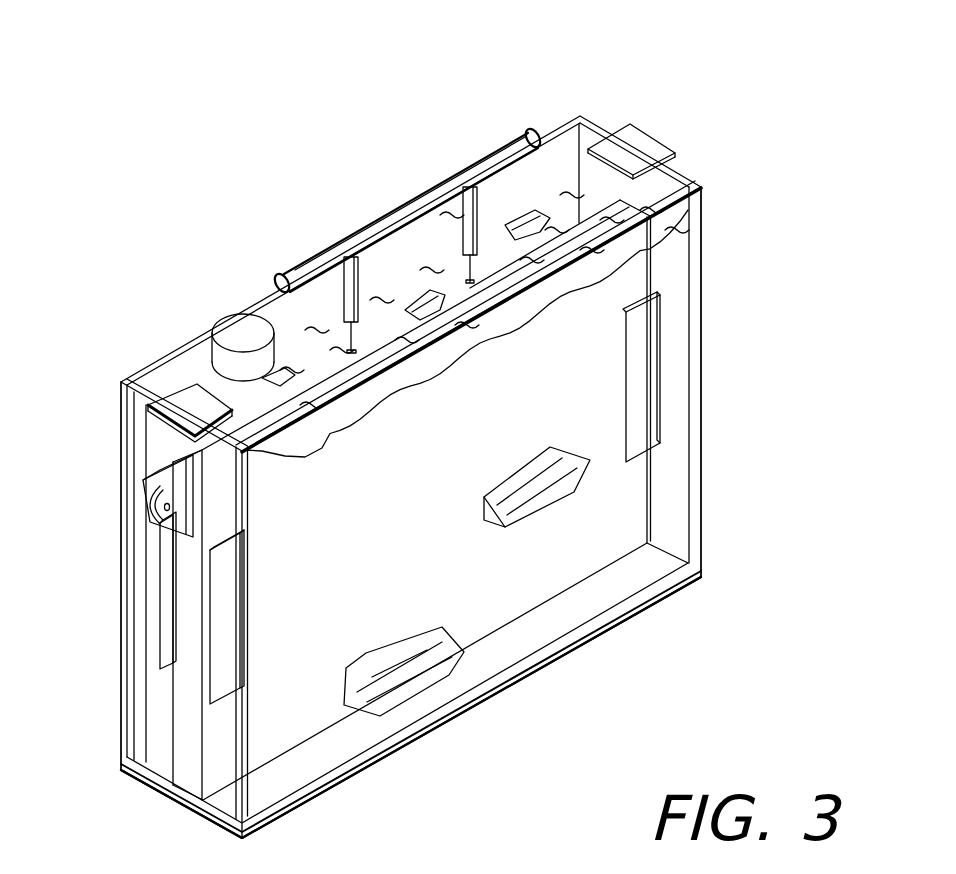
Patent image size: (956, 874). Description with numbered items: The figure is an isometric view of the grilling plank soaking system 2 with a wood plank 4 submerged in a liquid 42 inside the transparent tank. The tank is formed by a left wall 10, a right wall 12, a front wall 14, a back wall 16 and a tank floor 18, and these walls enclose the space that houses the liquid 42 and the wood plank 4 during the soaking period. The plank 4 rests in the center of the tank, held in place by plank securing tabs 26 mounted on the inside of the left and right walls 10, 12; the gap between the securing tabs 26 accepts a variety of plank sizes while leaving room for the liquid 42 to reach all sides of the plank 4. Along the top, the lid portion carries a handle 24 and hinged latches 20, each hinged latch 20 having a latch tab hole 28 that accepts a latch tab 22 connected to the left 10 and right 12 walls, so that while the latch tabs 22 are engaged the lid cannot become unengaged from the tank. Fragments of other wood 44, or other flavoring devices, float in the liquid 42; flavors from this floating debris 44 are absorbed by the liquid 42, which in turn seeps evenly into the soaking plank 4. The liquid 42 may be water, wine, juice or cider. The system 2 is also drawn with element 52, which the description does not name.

The grilling plank soaking system 2 is at (750, 54).
The wood plank 4 is at (388, 517).
The left wall 10 is at (145, 722).
The right wall 12 is at (703, 238).
The front wall 14 is at (669, 517).
The back wall 16 is at (120, 582).
The tank floor 18 is at (433, 731).
The hinged latch 20 is at (121, 386).
The latch tab 22 is at (155, 508).
The handle 24 is at (386, 211).
The plank securing tab 26 is at (280, 667).
The latch tab hole 28 is at (165, 490).
The liquid 42 is at (572, 195).
The fragments of other wood 44 is at (417, 303).
The cap 52 is at (242, 330).